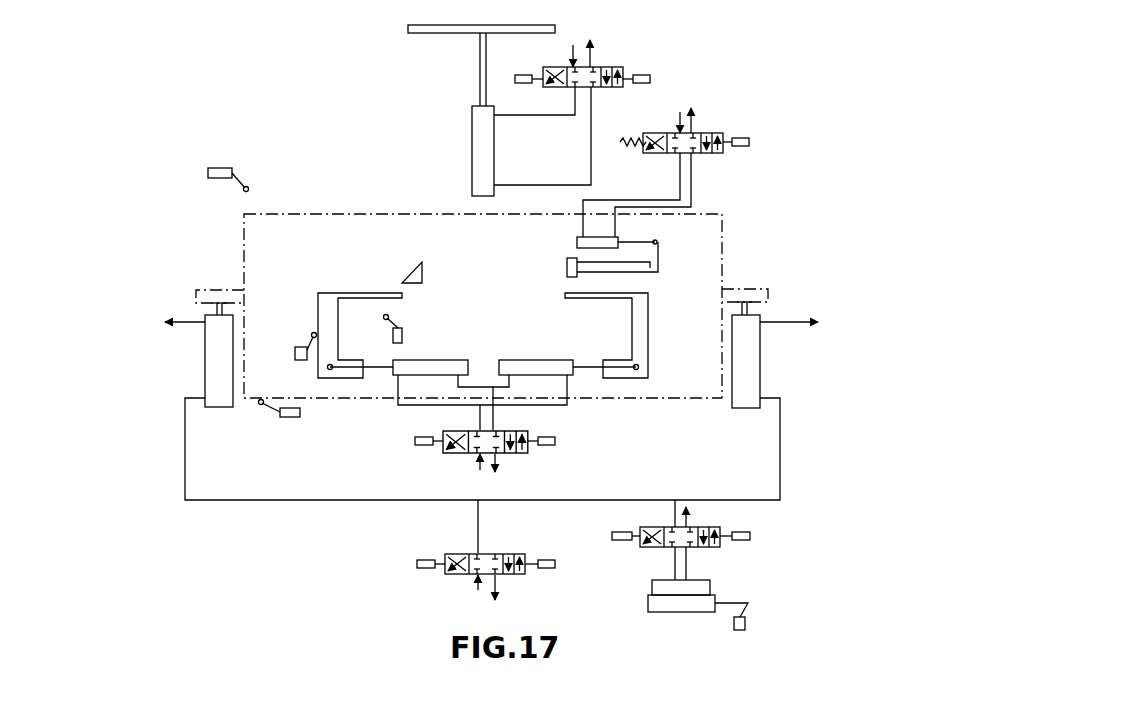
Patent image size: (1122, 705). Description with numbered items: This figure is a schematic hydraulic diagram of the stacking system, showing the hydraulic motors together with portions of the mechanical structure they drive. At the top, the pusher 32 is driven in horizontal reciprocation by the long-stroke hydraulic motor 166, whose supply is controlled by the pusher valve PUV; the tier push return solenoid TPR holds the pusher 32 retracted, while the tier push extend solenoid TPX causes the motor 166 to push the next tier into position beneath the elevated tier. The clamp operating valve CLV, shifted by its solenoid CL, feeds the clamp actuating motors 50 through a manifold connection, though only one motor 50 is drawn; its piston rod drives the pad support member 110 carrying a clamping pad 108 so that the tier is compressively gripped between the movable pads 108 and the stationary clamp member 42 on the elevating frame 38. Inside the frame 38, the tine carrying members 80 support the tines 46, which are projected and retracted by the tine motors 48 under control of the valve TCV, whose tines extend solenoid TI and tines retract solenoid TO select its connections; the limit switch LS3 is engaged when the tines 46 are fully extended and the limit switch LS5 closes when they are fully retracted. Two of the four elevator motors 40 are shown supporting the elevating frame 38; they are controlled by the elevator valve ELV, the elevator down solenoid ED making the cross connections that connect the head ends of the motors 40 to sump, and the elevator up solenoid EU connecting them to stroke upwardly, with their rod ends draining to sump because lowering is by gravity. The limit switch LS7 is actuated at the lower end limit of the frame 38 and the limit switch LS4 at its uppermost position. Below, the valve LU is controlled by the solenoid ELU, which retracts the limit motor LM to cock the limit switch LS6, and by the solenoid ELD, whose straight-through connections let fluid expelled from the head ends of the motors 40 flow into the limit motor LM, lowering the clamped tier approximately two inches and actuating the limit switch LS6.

The pusher 32 is at (452, 35).
The hydraulic motor 166 is at (472, 146).
The pusher valve PUV is at (620, 68).
The tier push return solenoid TPR is at (521, 75).
The tier push extend solenoid TPX is at (652, 70).
The clamp operating valve CLV is at (714, 131).
The clamp solenoid CL is at (742, 138).
The elevating frame 38 is at (309, 213).
The hydraulic motors 40 is at (218, 355).
The stationary clamp member 42 is at (430, 271).
The tines 46 is at (397, 298).
The hydraulic motors 48 is at (513, 367).
The tine carrying members 80 is at (632, 334).
The hydraulic motors 50 is at (577, 243).
The clamping pads 108 is at (567, 266).
The clamping pad support member 110 is at (652, 272).
The limit switch LS3 is at (392, 337).
The limit switch LS4 is at (215, 168).
The limit switch LS5 is at (298, 347).
The limit switch LS6 is at (747, 623).
The limit switch LS7 is at (289, 418).
The tine control valve TCV is at (528, 453).
The tines retract solenoid TO is at (421, 437).
The tines extend solenoid TI is at (546, 437).
The elevator valve ELV is at (462, 578).
The elevator down solenoid ED is at (422, 560).
The elevator up solenoid EU is at (545, 560).
The limit valve LU is at (708, 548).
The elevating limit up solenoid ELU is at (620, 532).
The elevating limit down solenoid ELD is at (740, 532).
The limit motor LM is at (685, 605).